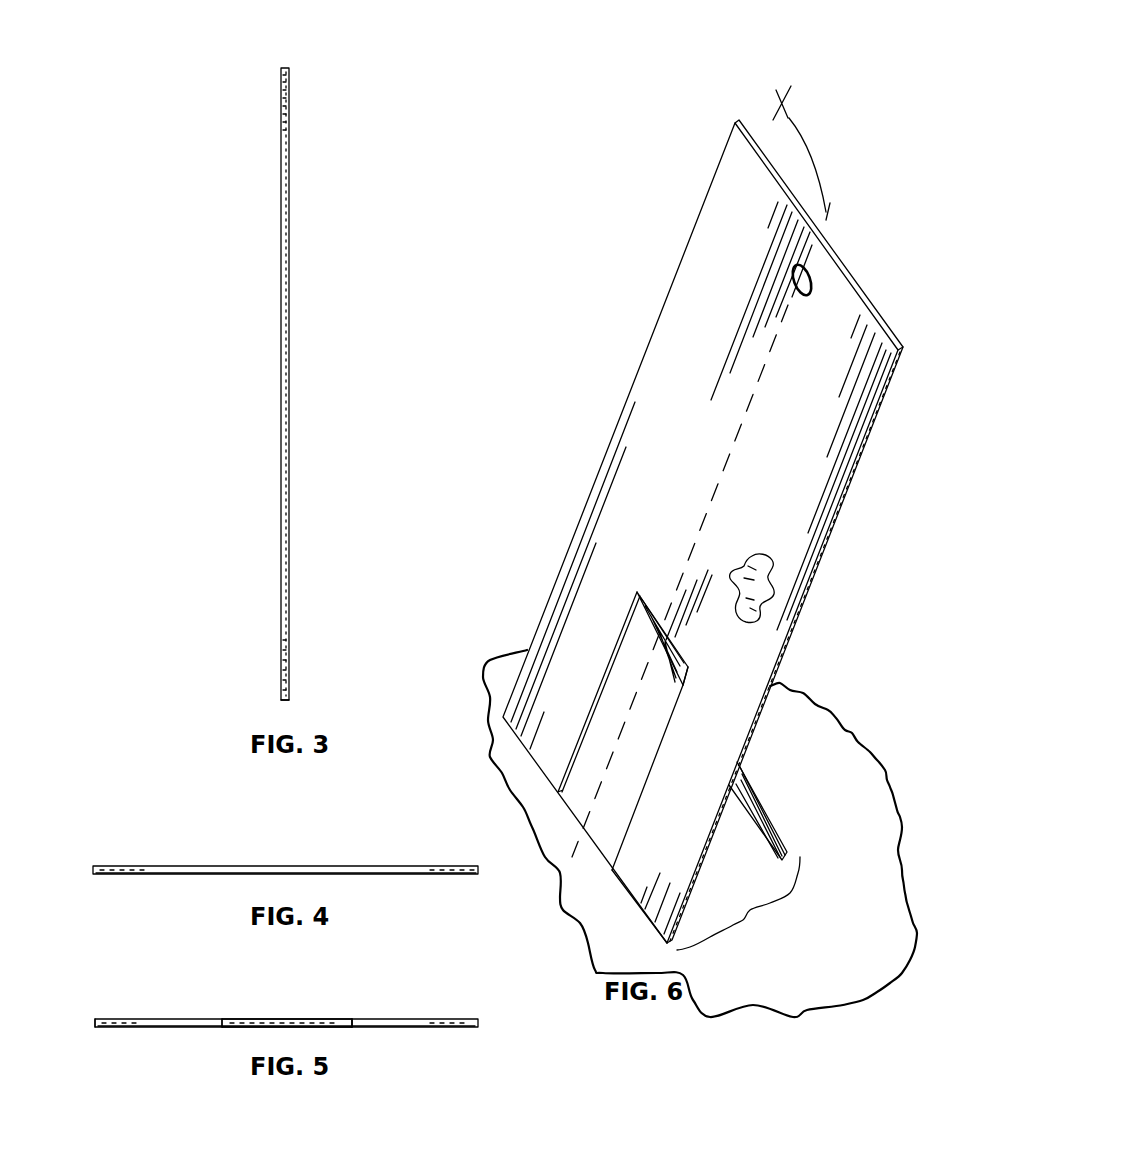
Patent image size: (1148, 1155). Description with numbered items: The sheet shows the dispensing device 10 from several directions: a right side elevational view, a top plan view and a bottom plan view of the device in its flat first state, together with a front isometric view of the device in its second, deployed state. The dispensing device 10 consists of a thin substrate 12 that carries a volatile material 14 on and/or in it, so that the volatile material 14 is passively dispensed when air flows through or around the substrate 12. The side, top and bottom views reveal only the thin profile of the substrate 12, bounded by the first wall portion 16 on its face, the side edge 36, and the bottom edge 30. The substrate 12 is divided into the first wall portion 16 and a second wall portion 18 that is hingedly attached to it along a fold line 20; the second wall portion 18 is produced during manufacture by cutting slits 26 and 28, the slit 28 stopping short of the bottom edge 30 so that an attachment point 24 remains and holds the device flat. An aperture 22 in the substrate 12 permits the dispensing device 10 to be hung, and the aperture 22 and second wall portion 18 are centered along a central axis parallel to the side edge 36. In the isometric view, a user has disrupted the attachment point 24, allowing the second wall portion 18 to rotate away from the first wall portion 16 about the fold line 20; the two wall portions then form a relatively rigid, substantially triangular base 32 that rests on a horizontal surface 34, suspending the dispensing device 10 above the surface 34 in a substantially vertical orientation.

In FIG. 3, the dispensing device 10 is at (340, 70).
In FIG. 4, the dispensing device 10 is at (404, 836).
In FIG. 5, the dispensing device 10 is at (436, 993).
In FIG. 6, the dispensing device 10 is at (872, 134).
In FIG. 3, the substrate 12 is at (320, 398).
In FIG. 4, the substrate 12 is at (456, 868).
In FIG. 5, the substrate 12 is at (479, 1019).
In FIG. 6, the substrate 12 is at (730, 534).
In FIG. 6, the volatile material 14 is at (770, 583).
In FIG. 3, the first wall portion 16 is at (288, 278).
In FIG. 4, the first wall portion 16 is at (480, 870).
In FIG. 5, the first wall portion 16 is at (455, 1024).
In FIG. 6, the first wall portion 16 is at (797, 522).
In FIG. 5, the second wall portion 18 is at (330, 1018).
In FIG. 6, the second wall portion 18 is at (763, 810).
In FIG. 6, the fold line 20 is at (697, 663).
In FIG. 6, the aperture 22 is at (812, 265).
In FIG. 5, the attachment point 24 is at (352, 1028).
In FIG. 5, the slit 26 is at (218, 1035).
In FIG. 5, the slit 28 is at (360, 1010).
In FIG. 3, the bottom edge 30 is at (283, 703).
In FIG. 5, the bottom edge 30 is at (122, 1026).
In FIG. 6, the bottom edge 30 is at (667, 943).
In FIG. 6, the base 32 is at (747, 917).
In FIG. 6, the surface 34 is at (870, 883).
In FIG. 3, the side edge 36 is at (286, 399).
In FIG. 4, the side edge 36 is at (92, 868).
In FIG. 5, the side edge 36 is at (95, 1020).
In FIG. 6, the side edge 36 is at (795, 622).